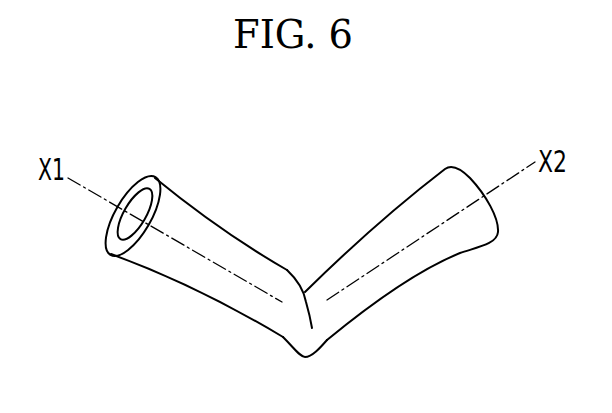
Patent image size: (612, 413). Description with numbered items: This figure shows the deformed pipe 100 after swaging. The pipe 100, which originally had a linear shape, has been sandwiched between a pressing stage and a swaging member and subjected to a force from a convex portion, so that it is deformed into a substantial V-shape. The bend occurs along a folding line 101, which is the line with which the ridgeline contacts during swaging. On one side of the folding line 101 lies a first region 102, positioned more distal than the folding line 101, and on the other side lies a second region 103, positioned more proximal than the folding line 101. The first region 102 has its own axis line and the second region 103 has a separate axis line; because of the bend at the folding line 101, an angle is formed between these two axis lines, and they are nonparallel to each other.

The pipe 100 is at (359, 206).
The folding line 101 is at (310, 313).
The first region 102 is at (197, 210).
The second region 103 is at (455, 253).